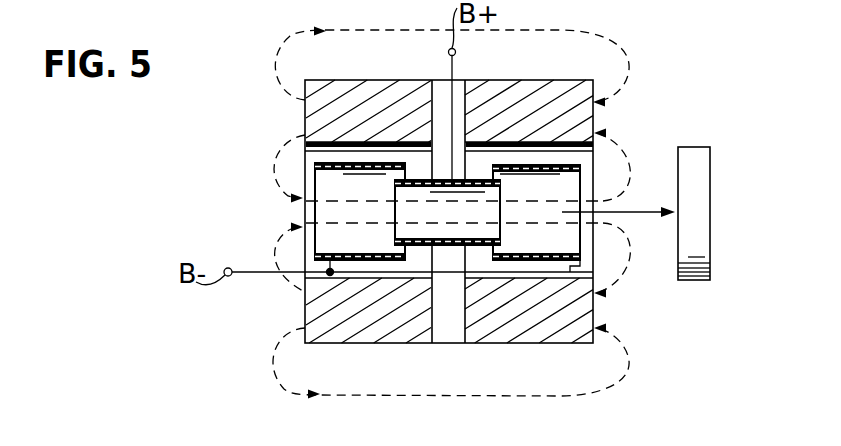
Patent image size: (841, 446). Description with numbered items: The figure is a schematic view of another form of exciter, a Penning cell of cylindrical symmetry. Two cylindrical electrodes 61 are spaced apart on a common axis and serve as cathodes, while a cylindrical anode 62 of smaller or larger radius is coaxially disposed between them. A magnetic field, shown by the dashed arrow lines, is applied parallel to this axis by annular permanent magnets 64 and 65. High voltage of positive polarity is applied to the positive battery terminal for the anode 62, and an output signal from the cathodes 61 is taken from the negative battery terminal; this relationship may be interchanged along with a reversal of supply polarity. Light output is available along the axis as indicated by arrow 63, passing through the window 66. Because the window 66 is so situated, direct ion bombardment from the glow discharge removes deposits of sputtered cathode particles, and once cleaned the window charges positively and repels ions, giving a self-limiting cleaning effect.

The cylindrical electrodes 61 is at (317, 216).
The cylindrical anode 62 is at (447, 246).
The arrow 63 is at (641, 214).
The annular permanent magnet 64 is at (370, 93).
The annular permanent magnet 65 is at (517, 82).
The window 66 is at (703, 147).